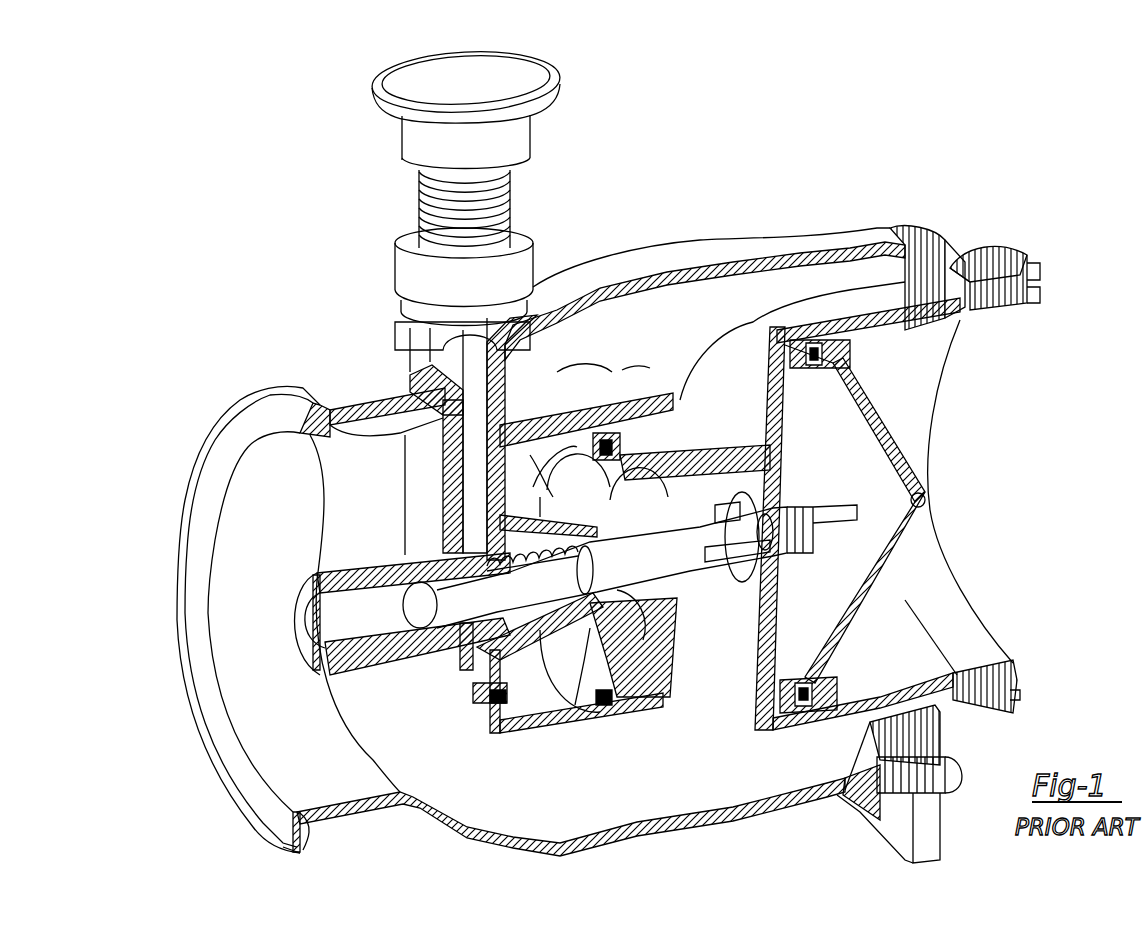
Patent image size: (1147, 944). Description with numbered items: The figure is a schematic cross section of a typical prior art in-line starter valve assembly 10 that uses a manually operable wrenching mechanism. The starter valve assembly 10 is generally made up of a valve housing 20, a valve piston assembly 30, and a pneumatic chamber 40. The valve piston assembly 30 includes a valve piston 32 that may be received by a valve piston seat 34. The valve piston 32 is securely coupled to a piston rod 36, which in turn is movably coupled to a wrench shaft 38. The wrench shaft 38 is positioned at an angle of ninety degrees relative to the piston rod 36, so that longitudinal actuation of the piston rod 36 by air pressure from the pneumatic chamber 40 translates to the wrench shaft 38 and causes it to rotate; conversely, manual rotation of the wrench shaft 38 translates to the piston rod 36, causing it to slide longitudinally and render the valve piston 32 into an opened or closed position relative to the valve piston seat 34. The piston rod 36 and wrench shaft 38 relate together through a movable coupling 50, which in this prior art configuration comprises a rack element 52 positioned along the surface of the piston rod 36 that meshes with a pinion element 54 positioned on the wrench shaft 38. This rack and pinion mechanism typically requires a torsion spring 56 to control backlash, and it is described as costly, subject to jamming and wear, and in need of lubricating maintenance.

The starter valve assembly 10 is at (848, 188).
The valve housing 20 is at (235, 405).
The valve piston assembly 30 is at (541, 410).
The valve piston 32 is at (893, 322).
The valve piston seat 34 is at (938, 655).
The piston rod 36 is at (655, 568).
The wrench shaft 38 is at (397, 333).
The pneumatic chamber 40 is at (875, 530).
The movable coupling 50 is at (420, 533).
The rack element 52 is at (523, 566).
The pinion element 54 is at (443, 534).
The torsion spring 56 is at (507, 221).